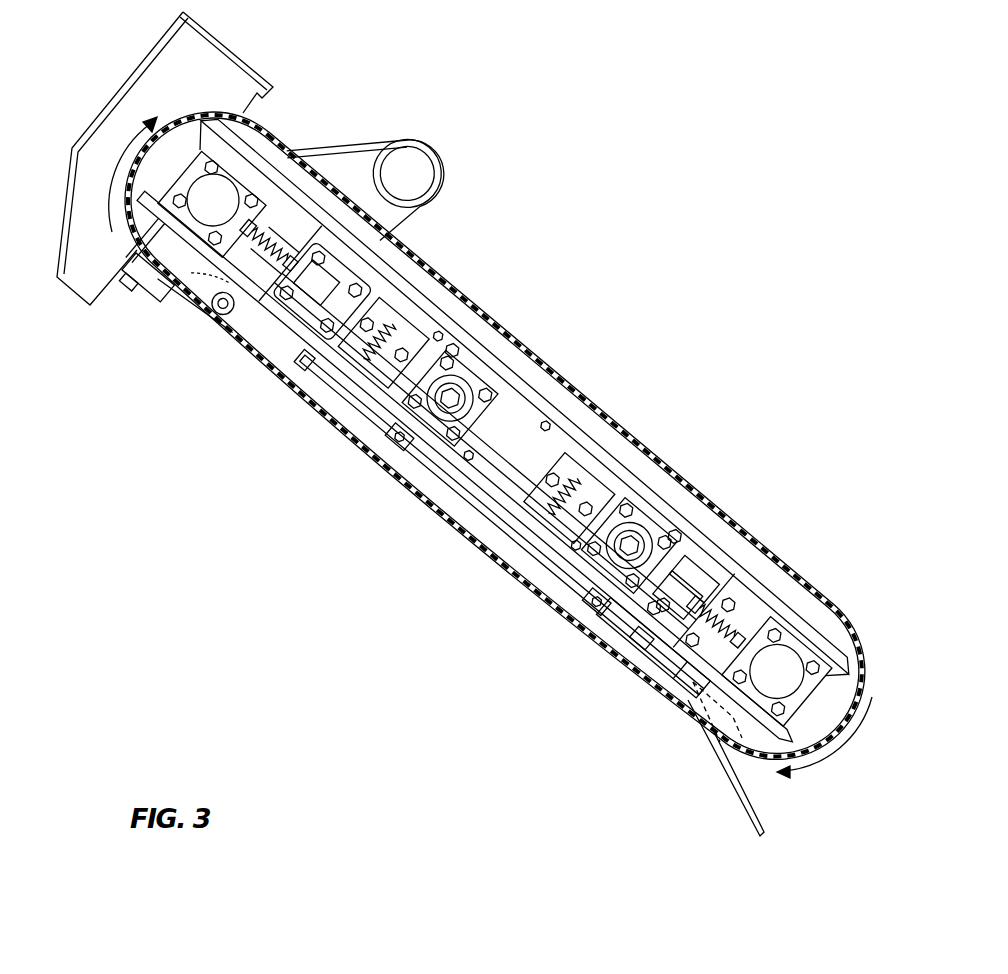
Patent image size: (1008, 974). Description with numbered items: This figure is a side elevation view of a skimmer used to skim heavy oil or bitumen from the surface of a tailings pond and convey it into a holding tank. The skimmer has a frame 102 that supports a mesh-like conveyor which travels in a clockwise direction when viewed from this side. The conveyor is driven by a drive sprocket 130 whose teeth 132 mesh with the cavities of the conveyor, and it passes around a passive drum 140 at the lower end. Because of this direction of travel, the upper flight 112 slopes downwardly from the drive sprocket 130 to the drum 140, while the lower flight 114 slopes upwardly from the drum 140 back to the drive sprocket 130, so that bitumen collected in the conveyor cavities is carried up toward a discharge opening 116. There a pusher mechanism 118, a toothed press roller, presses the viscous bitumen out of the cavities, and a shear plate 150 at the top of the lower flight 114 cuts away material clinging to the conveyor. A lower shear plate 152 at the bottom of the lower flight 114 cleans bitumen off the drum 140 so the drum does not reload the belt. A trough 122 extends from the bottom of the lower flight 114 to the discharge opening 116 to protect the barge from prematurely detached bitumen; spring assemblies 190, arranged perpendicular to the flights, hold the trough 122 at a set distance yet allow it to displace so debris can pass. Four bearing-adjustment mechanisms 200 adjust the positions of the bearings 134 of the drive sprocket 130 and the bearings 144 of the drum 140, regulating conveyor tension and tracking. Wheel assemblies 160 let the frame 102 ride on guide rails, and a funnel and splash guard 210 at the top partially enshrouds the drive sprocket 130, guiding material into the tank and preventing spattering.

The frame 102 is at (652, 520).
The upper flight 112 is at (538, 307).
The lower flight 114 is at (394, 496).
The discharge opening 116 is at (261, 365).
The pusher mechanism 118 is at (237, 327).
The trough 122 is at (690, 723).
The drive sprocket 130 is at (268, 157).
The teeth 132 is at (300, 150).
The bearings 134 is at (195, 195).
The drum 140 is at (787, 603).
The bearings 144 is at (782, 660).
The shear plate 150 is at (182, 310).
The lower shear plate 152 is at (677, 670).
The wheel assemblies 160 is at (467, 383).
The spring assemblies 190 is at (380, 370).
The bearing-adjustment mechanisms 200 is at (250, 250).
The funnel and splash guard 210 is at (257, 78).